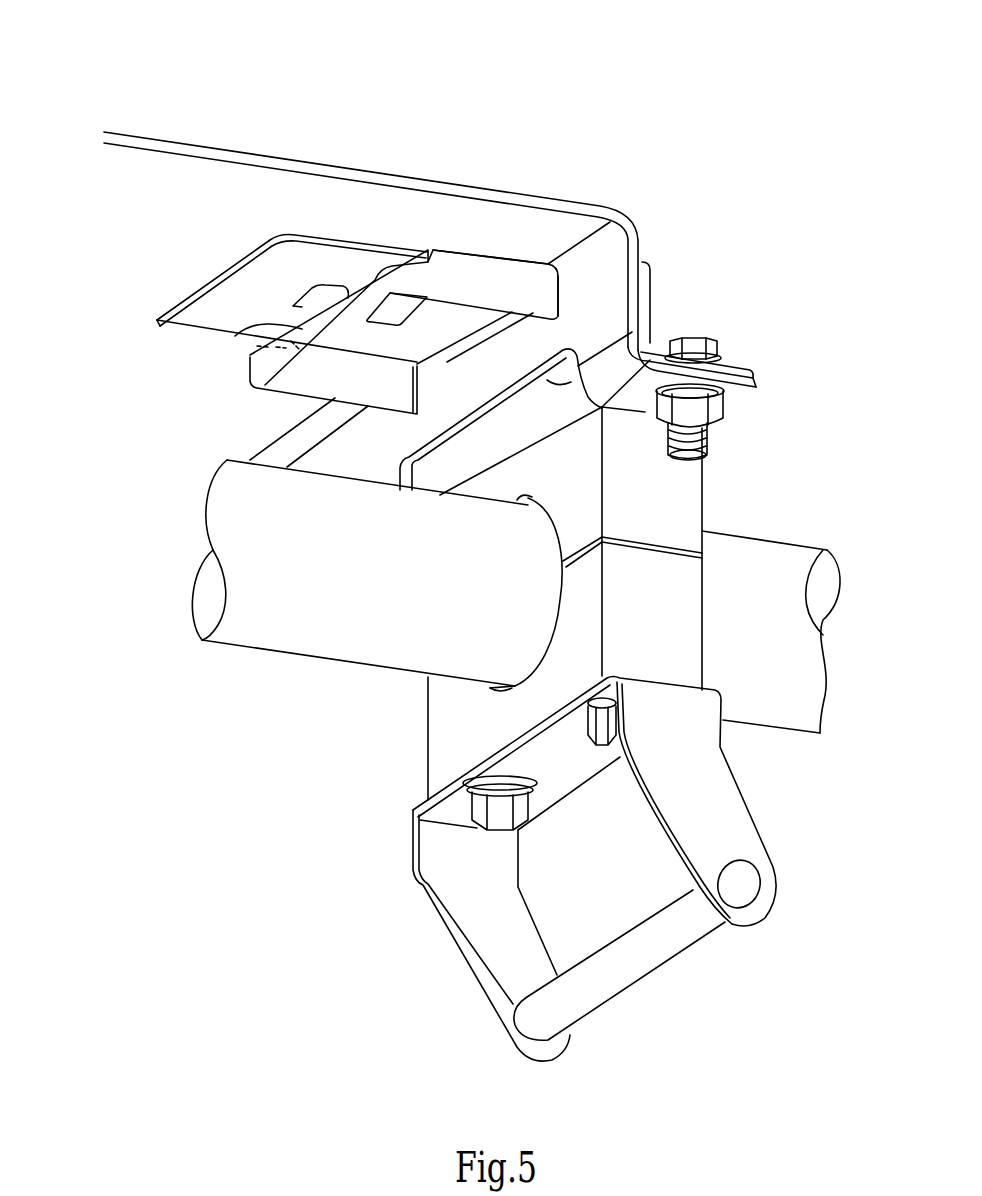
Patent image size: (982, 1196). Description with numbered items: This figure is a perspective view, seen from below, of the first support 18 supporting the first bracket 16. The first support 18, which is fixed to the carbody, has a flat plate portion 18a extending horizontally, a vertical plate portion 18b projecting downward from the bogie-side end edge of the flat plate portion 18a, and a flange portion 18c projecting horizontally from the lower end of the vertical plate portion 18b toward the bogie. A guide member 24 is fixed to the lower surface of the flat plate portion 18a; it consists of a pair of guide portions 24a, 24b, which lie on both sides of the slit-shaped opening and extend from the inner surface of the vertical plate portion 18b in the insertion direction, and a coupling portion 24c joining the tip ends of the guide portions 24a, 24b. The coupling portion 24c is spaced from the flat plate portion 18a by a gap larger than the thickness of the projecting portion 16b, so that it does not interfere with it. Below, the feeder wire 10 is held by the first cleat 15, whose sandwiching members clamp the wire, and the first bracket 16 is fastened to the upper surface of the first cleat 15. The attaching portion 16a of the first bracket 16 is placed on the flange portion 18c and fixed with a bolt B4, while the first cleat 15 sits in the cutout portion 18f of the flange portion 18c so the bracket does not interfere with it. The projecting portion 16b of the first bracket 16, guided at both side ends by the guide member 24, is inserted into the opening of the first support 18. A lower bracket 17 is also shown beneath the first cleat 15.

The feeder wire 10 is at (297, 657).
The first cleat 15 is at (423, 713).
The first bracket 16 is at (654, 284).
The attaching portion 16a is at (751, 365).
The projecting portion 16b is at (213, 302).
The lower bracket 17 is at (664, 965).
The first support 18 is at (211, 142).
The flat plate portion 18a is at (540, 205).
The vertical plate portion 18b is at (640, 247).
The flange portion 18c is at (757, 388).
The cutout portion 18f is at (640, 323).
The guide member 24 is at (446, 243).
The guide portion 24a is at (470, 265).
The guide portion 24b is at (287, 394).
The coupling portion 24c is at (297, 328).
The bolt B4 is at (705, 336).